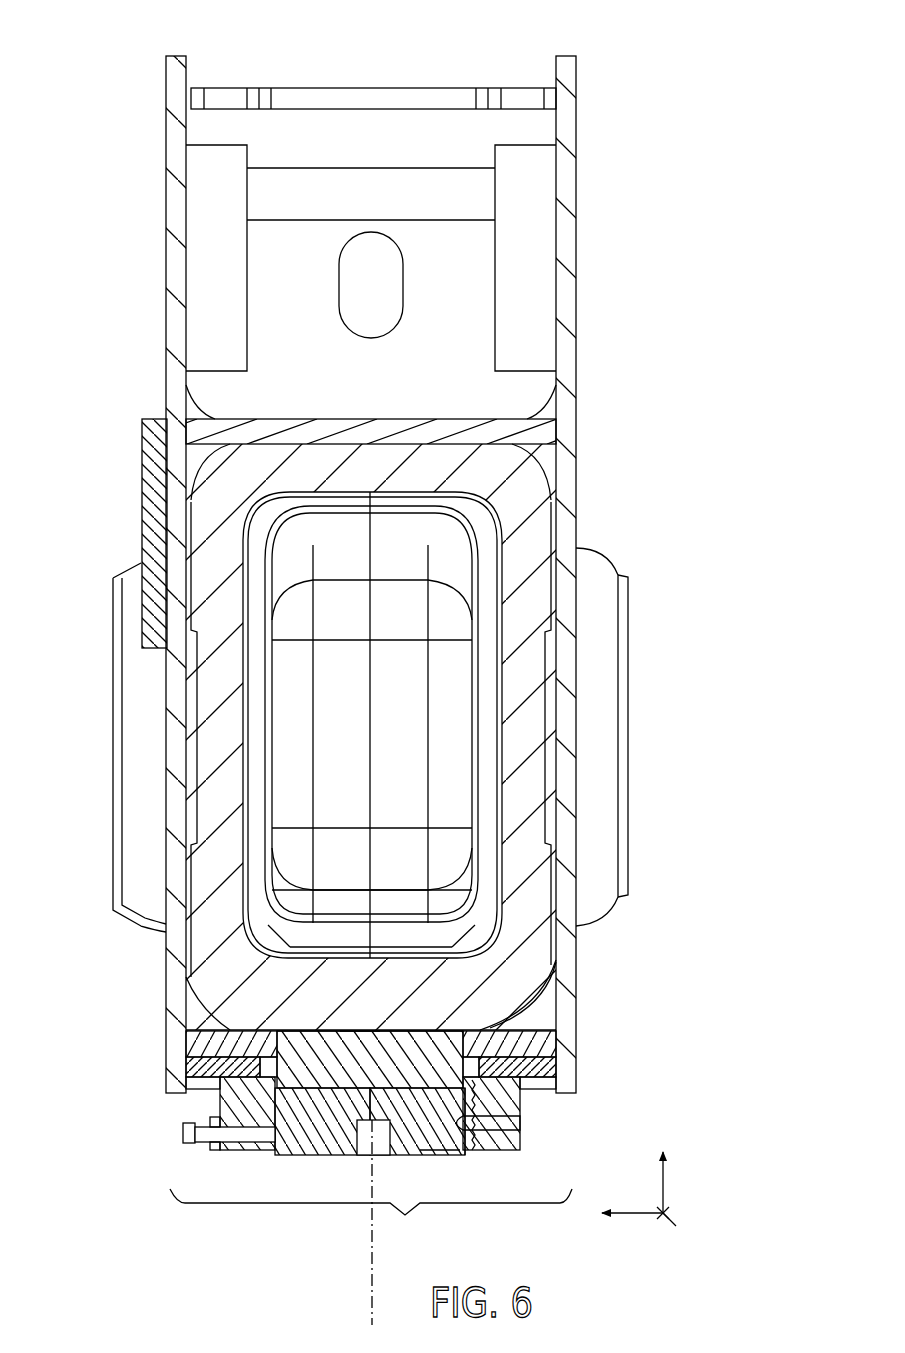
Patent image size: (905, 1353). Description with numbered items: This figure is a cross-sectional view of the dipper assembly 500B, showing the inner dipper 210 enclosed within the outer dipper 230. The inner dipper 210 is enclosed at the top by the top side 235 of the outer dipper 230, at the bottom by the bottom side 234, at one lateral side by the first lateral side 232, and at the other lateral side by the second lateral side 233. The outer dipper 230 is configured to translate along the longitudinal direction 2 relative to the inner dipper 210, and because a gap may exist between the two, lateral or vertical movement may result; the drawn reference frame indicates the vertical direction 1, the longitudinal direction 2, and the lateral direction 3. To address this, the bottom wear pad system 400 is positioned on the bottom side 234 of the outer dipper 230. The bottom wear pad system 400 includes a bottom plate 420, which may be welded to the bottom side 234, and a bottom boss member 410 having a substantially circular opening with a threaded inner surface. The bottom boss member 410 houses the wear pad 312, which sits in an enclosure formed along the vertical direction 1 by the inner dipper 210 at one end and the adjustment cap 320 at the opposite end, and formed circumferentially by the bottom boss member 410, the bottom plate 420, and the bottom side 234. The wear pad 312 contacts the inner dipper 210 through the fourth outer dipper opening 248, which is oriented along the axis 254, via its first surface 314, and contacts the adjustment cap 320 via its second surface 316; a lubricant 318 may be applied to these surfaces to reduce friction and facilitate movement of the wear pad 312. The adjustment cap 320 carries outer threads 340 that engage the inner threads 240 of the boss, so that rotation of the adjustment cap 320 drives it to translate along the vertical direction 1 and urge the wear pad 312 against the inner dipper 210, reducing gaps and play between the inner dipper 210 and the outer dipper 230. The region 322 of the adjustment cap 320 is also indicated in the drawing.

The bearing assembly 500B is at (588, 34).
The first lateral side 232 is at (180, 158).
The second lateral side 233 is at (578, 128).
The outer dipper 230 is at (170, 302).
The top side 235 is at (421, 441).
The inner dipper 210 is at (520, 487).
The fourth outer dipper opening 248 is at (496, 1020).
The bottom side 234 is at (205, 1043).
The bottom plate 420 is at (205, 1068).
The bottom boss member 410 is at (213, 1082).
The first surface 314 is at (292, 1030).
The wear pad 312 is at (352, 1152).
The lubricant 318 is at (350, 1024).
The second surface 316 is at (303, 1156).
The recess 322 is at (410, 1150).
The adjustment cap 320 is at (490, 1156).
The inner threads 240 is at (270, 1112).
The outer threads 340 is at (185, 1136).
The bottom wear pad system 400 is at (371, 1218).
The axis 254 is at (370, 1290).
The vertical direction 1 is at (663, 1188).
The longitudinal direction 2 is at (665, 1218).
The lateral direction 3 is at (641, 1215).